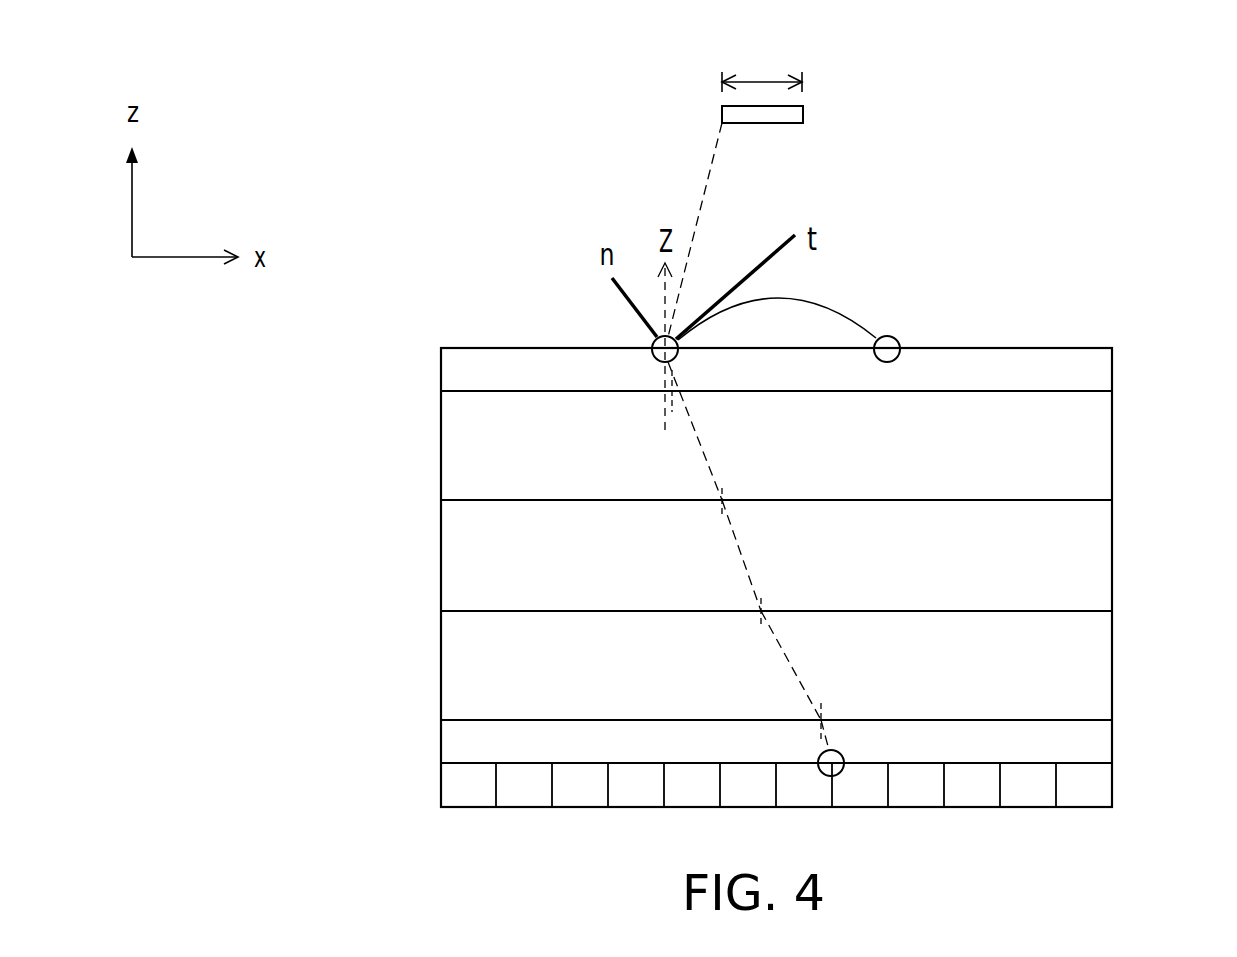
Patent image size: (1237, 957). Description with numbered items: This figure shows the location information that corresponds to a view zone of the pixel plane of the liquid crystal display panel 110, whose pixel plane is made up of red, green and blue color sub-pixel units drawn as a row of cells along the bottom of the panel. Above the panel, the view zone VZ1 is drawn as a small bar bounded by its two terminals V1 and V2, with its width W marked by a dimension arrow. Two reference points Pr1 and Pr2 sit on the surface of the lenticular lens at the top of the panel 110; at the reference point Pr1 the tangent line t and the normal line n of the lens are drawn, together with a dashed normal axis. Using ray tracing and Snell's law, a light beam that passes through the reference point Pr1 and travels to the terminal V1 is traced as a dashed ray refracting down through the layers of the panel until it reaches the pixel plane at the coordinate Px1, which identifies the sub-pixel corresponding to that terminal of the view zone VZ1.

The liquid crystal display panel 110 is at (1172, 348).
The view zone VZ1 is at (759, 116).
The terminal of the view zone V1 is at (690, 116).
The terminal of the view zone V2 is at (826, 116).
The width of the view zone W is at (762, 61).
The reference point Pr1 is at (652, 341).
The reference point Pr2 is at (886, 344).
The coordinate of terminal V1 with respect to reference point Pr1 Px1 is at (842, 753).